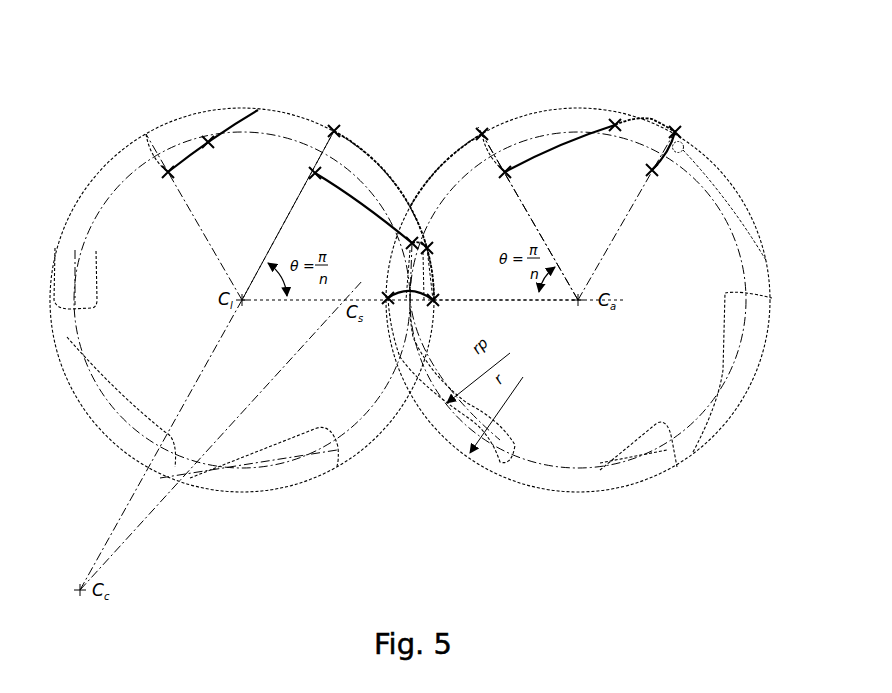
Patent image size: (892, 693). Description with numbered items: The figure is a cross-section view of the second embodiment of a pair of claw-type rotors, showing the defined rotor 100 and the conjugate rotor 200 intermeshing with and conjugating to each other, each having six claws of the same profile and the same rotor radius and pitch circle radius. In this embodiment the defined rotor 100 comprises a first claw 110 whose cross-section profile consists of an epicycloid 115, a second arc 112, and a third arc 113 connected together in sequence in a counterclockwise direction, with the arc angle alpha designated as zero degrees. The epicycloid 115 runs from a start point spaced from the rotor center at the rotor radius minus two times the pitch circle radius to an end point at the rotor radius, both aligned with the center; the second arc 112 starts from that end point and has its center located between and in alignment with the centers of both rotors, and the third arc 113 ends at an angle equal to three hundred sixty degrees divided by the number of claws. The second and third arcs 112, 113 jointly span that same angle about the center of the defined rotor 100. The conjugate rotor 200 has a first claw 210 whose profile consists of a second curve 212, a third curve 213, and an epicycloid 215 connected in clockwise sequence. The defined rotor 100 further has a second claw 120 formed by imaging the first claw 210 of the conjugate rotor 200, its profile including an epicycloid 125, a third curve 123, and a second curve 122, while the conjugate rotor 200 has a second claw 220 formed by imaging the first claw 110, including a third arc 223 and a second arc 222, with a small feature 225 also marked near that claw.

The defined rotor 100 is at (132, 132).
The first claw 110 is at (338, 302).
The second arc 112 is at (410, 257).
The third arc 113 is at (358, 190).
The epicycloid 115 is at (390, 291).
The second claw 120 is at (240, 232).
The second curve 122 is at (188, 160).
The third curve 123 is at (254, 124).
The epicycloid 125 is at (307, 162).
The conjugate rotor 200 is at (692, 140).
The first claw 210 is at (519, 285).
The second curve 212 is at (445, 272).
The third curve 213 is at (433, 213).
The epicycloid 215 is at (488, 176).
The second claw 220 is at (607, 212).
The second arc 222 is at (639, 128).
The third arc 223 is at (552, 152).
The second lobe tip circle 225 is at (685, 147).